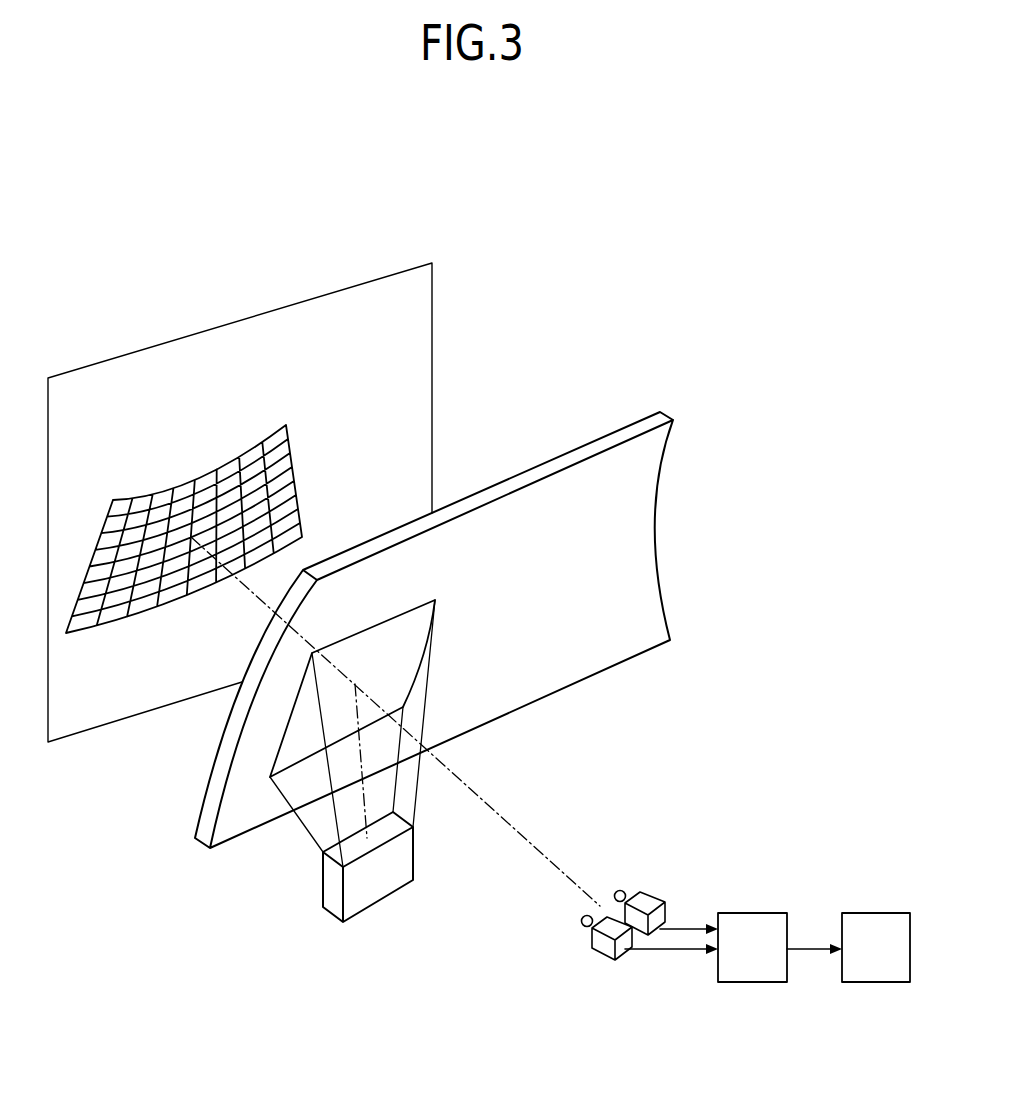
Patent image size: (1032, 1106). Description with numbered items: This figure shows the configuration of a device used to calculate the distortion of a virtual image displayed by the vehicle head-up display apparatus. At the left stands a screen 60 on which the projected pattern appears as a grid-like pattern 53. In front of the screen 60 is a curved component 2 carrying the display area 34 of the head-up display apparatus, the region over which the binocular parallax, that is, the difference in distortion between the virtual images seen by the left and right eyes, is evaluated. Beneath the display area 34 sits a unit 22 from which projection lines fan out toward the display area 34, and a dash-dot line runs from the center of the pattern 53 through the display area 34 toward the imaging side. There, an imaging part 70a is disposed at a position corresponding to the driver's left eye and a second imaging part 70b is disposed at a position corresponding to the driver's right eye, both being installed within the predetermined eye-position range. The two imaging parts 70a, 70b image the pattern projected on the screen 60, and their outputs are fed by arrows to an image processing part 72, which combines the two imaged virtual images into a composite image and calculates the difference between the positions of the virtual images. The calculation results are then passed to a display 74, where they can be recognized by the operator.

The concave mirror 2 is at (657, 488).
The projector 22 is at (323, 888).
The display area 34 is at (280, 733).
The grid pattern image 53 is at (288, 426).
The screen 60 is at (432, 302).
The imaging part 70a is at (597, 952).
The imaging part 70b is at (640, 903).
The image processing unit 72 is at (757, 913).
The display 74 is at (884, 913).